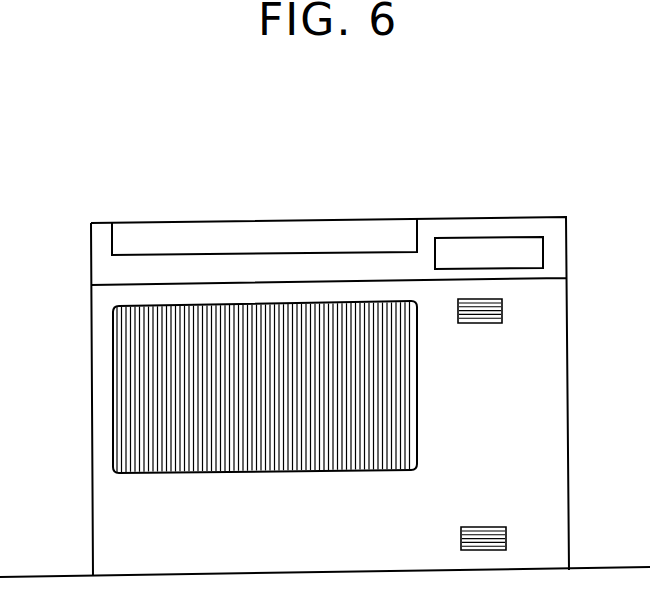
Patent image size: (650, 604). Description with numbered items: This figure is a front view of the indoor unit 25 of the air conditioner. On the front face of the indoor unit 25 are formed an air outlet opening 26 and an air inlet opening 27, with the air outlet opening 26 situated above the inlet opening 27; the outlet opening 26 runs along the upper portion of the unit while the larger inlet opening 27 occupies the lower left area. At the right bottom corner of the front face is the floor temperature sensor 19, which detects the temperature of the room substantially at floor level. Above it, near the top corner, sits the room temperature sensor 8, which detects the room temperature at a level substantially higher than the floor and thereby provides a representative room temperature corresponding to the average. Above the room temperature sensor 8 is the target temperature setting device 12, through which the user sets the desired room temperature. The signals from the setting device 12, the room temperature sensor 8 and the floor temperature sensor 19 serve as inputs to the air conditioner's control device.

The indoor unit 25 is at (101, 223).
The air outlet opening 26 is at (260, 222).
The temperature setting device 12 is at (508, 237).
The room temperature sensor 8 is at (502, 306).
The floor temperature sensor 19 is at (506, 538).
The air inlet opening 27 is at (113, 406).